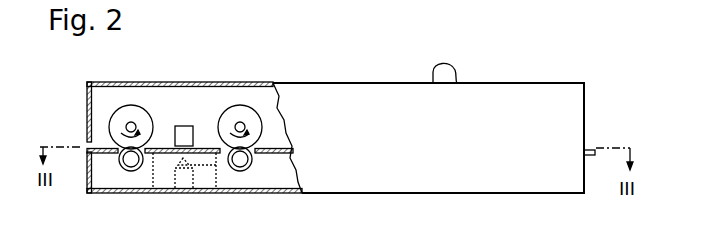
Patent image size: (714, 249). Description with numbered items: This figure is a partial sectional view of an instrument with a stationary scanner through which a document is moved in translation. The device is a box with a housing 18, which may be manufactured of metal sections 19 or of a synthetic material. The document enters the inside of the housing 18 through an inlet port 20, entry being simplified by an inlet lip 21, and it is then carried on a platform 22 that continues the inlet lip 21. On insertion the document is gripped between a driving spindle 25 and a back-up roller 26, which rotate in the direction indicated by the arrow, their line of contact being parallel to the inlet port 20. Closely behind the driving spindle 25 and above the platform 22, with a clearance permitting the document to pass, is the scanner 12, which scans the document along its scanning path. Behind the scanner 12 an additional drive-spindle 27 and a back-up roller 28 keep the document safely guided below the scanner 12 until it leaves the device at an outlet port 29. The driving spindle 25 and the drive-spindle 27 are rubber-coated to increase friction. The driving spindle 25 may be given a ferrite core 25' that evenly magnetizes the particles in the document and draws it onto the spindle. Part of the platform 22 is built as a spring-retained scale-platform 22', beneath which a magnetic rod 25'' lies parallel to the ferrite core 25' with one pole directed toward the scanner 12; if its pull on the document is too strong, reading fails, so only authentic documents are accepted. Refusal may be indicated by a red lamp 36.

The scanner 12 is at (186, 126).
The housing 18 is at (443, 178).
The metal sections 19 is at (175, 121).
The inlet port 20 is at (86, 141).
The inlet lip 21 is at (86, 154).
The platform 22 is at (191, 197).
The scale-platform 22' is at (232, 199).
The driving spindle 25 is at (123, 187).
The ferrite core 25' is at (176, 191).
The magnetic rod 25'' is at (190, 198).
The back-up roller 26 is at (137, 112).
The additional drive-spindle 27 is at (243, 171).
The back-up roller 28 is at (245, 112).
The outlet port 29 is at (589, 147).
The red lamp 36 is at (453, 75).